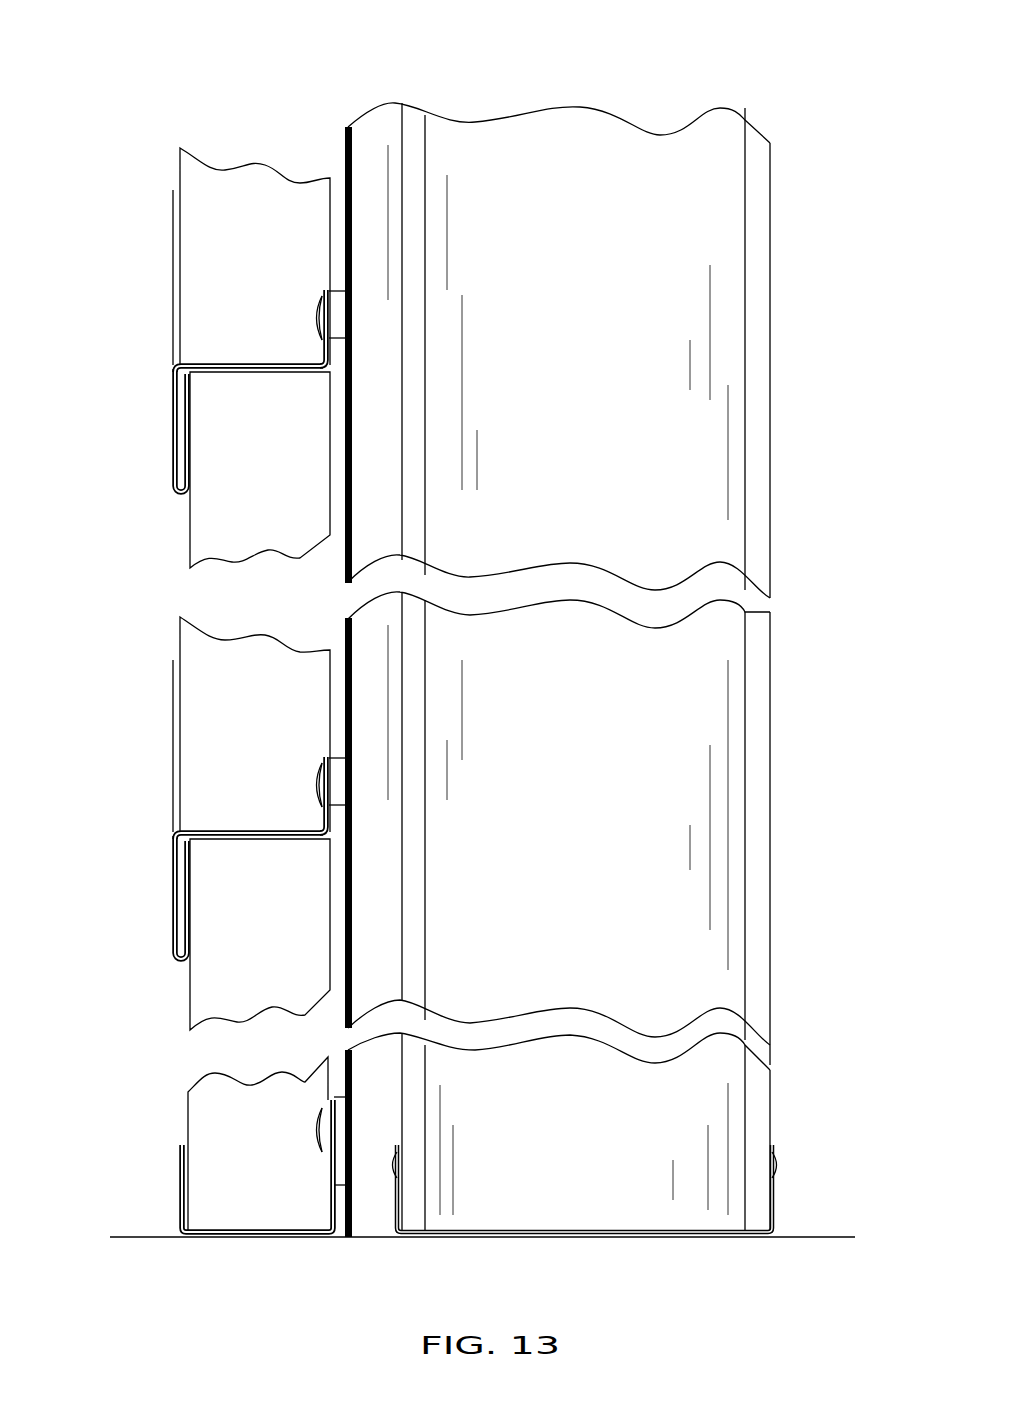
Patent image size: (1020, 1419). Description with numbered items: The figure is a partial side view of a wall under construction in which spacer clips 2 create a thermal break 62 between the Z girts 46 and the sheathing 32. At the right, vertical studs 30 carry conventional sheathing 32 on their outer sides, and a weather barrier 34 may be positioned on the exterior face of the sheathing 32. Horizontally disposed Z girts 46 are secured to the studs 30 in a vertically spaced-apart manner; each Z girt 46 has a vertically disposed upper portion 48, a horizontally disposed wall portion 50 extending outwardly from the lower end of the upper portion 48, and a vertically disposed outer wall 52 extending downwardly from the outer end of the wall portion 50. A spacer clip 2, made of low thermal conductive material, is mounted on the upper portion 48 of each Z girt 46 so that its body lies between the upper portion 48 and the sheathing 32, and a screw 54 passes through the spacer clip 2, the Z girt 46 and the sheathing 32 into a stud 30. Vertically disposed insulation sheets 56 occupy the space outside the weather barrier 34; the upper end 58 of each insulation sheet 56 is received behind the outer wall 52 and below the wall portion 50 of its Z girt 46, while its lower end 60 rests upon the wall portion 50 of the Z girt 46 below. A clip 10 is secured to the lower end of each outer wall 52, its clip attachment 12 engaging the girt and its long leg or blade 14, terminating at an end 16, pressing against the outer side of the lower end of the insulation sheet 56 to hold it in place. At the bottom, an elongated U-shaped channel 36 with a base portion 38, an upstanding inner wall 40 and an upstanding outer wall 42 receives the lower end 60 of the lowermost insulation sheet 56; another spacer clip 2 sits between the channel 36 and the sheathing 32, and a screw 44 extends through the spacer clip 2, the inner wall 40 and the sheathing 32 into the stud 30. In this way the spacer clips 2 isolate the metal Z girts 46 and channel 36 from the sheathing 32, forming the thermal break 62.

The spacer clip 2 is at (604, 618).
The clip 10 is at (460, 515).
The clip attachment 12 is at (207, 448).
The long leg or blade 14 is at (172, 268).
The end 16 is at (180, 190).
The stud 30 is at (667, 940).
The sheathing 32 is at (412, 186).
The weather barrier 34 is at (350, 167).
The channel 36 is at (417, 1211).
The base portion 38 is at (253, 1237).
The inner wall 40 is at (328, 1180).
The outer wall 42 is at (182, 1200).
The screw 44 is at (323, 1125).
The Z girt 46 is at (256, 358).
The upper portion 48 is at (323, 347).
The wall portion 50 is at (300, 374).
The outer wall 52 is at (176, 425).
The screw 54 is at (323, 318).
The insulation sheet 56 is at (271, 200).
The upper end 58 is at (258, 392).
The lower end 60 is at (232, 812).
The thermal break 62 is at (320, 985).